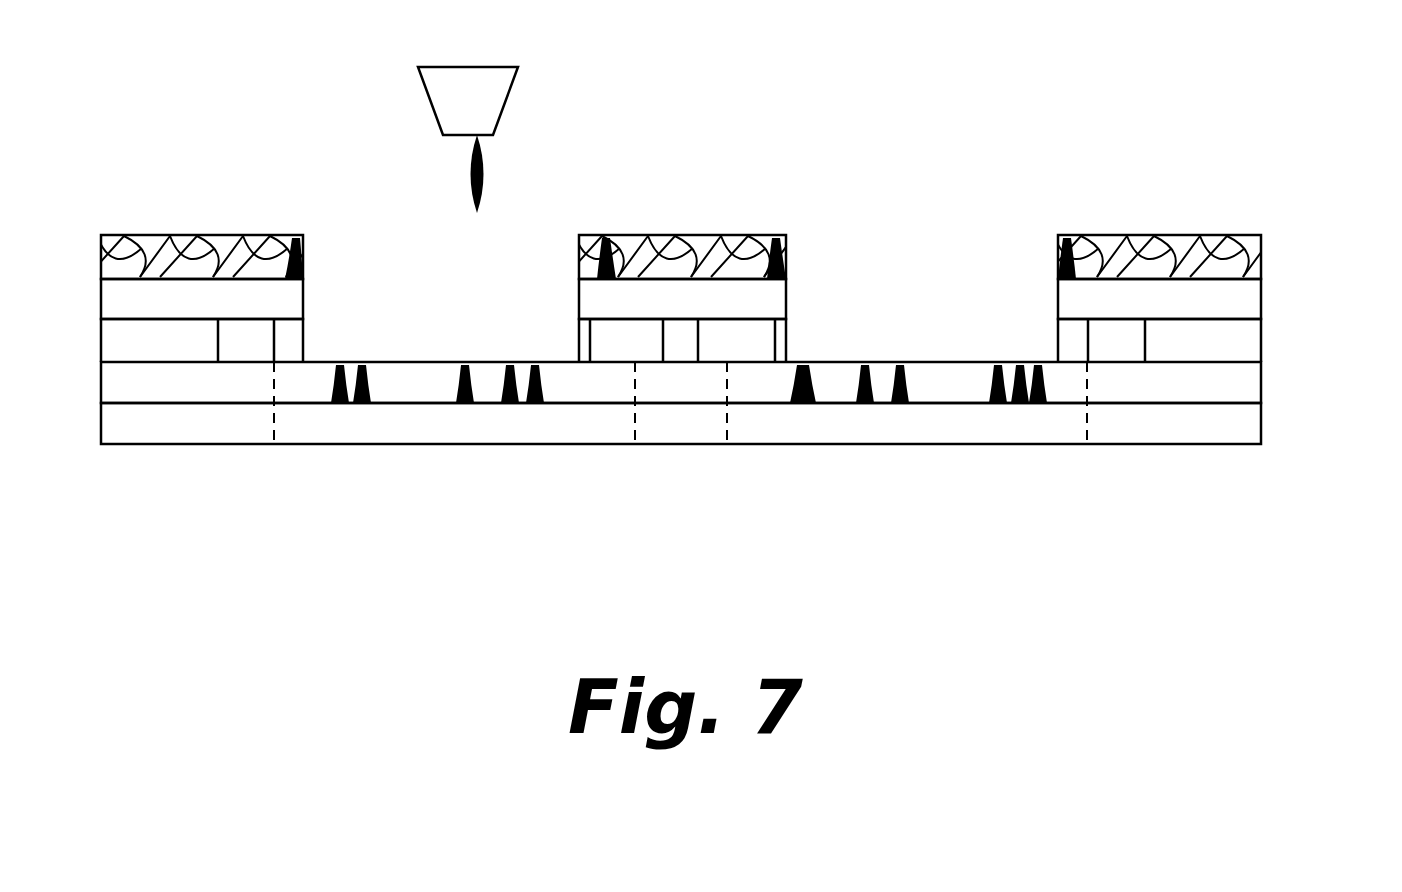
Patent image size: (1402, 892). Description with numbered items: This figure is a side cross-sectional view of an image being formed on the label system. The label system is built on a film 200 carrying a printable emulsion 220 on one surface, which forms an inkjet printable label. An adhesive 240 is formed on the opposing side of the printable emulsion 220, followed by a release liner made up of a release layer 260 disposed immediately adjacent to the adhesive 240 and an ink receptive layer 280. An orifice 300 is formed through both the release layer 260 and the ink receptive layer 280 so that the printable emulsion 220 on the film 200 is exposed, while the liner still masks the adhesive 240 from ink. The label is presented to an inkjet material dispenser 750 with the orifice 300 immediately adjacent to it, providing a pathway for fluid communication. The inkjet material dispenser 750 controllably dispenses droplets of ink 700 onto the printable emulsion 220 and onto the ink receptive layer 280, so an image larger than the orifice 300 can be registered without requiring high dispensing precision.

The film 200 is at (1261, 432).
The printable emulsion 220 is at (1261, 393).
The adhesive 240 is at (1261, 352).
The release layer 260 is at (1261, 305).
The ink receptive layer 280 is at (1261, 264).
The orifice 300 is at (926, 258).
The droplets of ink 700 is at (487, 182).
The inkjet material dispenser 750 is at (427, 88).